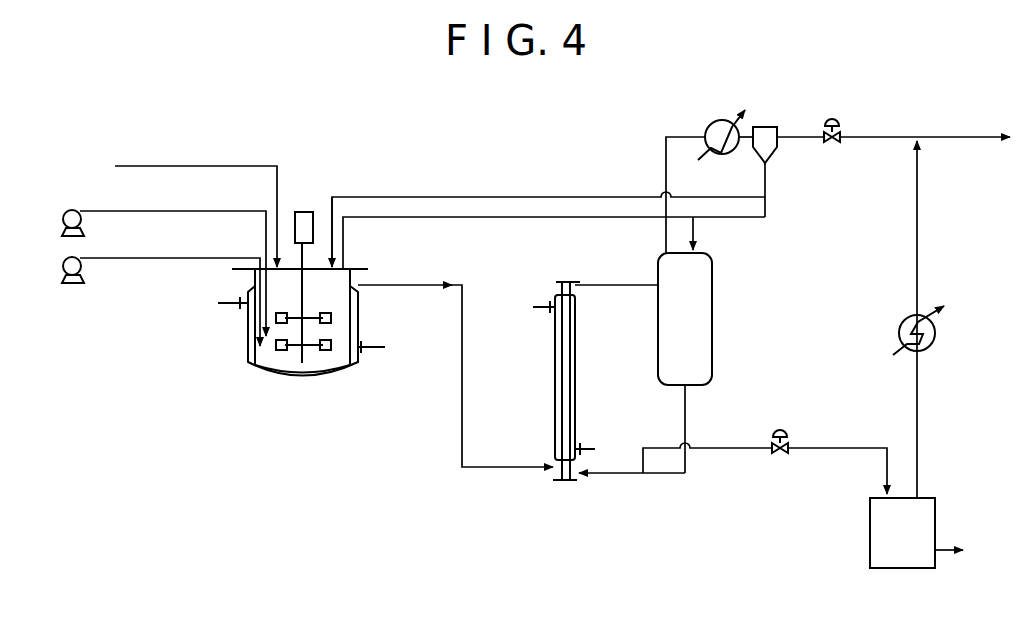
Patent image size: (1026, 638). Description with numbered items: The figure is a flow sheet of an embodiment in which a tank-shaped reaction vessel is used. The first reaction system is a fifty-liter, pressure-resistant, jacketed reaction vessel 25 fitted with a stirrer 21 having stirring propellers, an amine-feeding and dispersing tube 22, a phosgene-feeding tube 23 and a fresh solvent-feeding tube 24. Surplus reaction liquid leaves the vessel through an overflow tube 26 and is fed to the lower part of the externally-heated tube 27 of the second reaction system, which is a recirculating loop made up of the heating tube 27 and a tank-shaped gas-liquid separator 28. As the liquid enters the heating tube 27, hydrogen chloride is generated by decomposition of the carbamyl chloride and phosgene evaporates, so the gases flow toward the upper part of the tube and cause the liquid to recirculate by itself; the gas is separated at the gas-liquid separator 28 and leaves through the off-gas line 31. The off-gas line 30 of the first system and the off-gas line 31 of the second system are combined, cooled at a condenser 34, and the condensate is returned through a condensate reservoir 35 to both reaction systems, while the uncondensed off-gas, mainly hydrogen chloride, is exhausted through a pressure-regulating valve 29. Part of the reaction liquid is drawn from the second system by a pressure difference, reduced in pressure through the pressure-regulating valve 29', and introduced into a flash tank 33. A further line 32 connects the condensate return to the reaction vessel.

The stirrer 21 is at (307, 212).
The amine-feeding and dispersing tube 22 is at (188, 257).
The phosgene-feeding tube 23 is at (190, 211).
The fresh solvent-feeding tube 24 is at (205, 165).
The reaction vessel 25 is at (268, 360).
The overflow tube 26 is at (428, 287).
The externally-heated tube 27 is at (555, 370).
The gas-liquid separator 28 is at (658, 328).
The pressure-regulating valve 29 is at (858, 115).
The pressure-regulating valve 29' is at (797, 414).
The off-gas line 30 is at (516, 217).
The off-gas line 31 is at (665, 236).
The return line 32 is at (497, 196).
The flash tank 33 is at (937, 534).
The condenser 34 is at (704, 126).
The condensate reservoir 35 is at (778, 150).